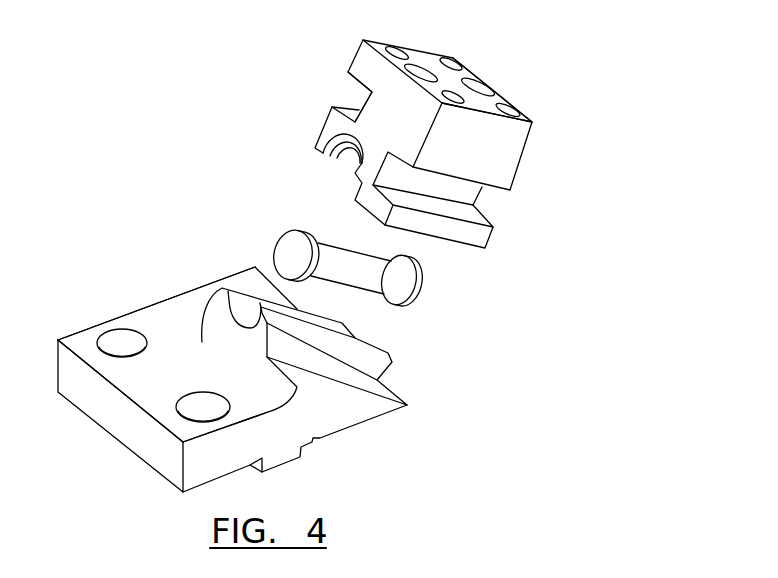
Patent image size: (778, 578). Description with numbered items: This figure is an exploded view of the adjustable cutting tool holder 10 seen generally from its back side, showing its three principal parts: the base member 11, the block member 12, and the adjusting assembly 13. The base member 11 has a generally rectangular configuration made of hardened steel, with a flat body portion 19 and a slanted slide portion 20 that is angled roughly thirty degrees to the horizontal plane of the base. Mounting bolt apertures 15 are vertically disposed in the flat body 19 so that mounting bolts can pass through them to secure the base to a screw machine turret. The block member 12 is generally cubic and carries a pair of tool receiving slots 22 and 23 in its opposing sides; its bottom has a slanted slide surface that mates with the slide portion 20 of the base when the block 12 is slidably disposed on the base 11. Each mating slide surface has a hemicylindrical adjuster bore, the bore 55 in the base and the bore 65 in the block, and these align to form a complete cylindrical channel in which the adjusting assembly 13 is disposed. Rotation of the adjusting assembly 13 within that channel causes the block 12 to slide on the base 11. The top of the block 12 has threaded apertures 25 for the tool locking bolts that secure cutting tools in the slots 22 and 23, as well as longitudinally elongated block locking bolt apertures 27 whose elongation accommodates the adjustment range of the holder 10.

The adjustable cutting tool holder 10 is at (572, 184).
The base member 11 is at (145, 275).
The block member 12 is at (298, 145).
The adjusting assembly 13 is at (428, 292).
The mounting bolt apertures 15 is at (110, 330).
The flat body portion 19 is at (170, 381).
The slanted slide portion 20 is at (403, 365).
The tool receiving slot 22 is at (490, 206).
The tool receiving slot 23 is at (347, 92).
The threaded apertures 25 is at (520, 111).
The block locking bolt apertures 27 is at (471, 73).
The hemicylindrical adjuster bore 55 is at (363, 335).
The hemicylindrical adjuster bore 65 is at (345, 165).